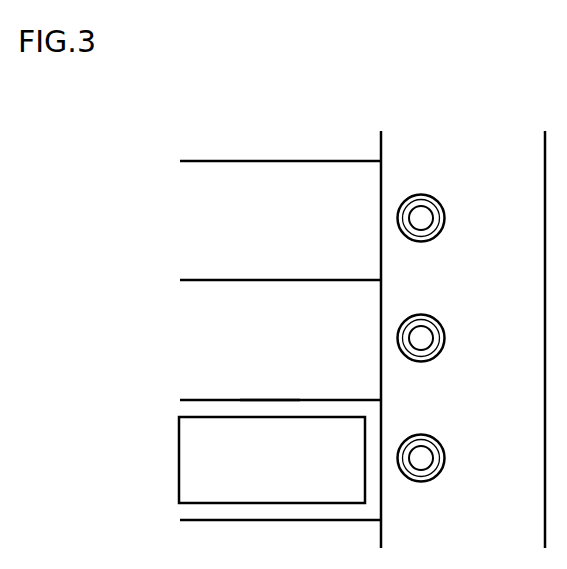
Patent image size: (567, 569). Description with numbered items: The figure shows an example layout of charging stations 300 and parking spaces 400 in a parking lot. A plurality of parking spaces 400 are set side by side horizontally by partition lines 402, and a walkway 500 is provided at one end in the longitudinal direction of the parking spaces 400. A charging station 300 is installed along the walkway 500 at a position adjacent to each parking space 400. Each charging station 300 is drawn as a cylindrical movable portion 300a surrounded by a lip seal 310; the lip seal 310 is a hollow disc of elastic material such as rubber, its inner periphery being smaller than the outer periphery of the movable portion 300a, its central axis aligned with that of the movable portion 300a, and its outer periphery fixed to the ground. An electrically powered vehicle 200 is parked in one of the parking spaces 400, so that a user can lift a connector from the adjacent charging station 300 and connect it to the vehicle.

The walkway 500 is at (407, 147).
The parking space 400 is at (190, 188).
The partition line 402 is at (271, 398).
The electrically powered vehicle 200 is at (179, 458).
The charging station 300 is at (463, 220).
The lip seal 310 is at (434, 197).
The movable portion 300a is at (431, 238).